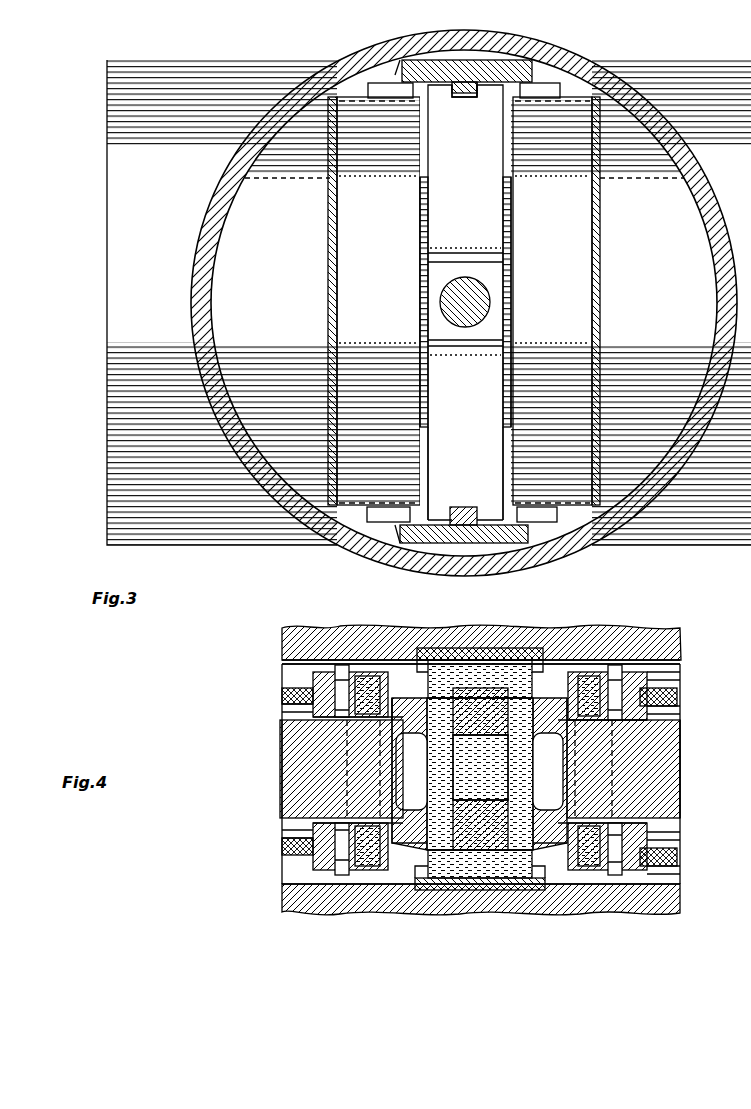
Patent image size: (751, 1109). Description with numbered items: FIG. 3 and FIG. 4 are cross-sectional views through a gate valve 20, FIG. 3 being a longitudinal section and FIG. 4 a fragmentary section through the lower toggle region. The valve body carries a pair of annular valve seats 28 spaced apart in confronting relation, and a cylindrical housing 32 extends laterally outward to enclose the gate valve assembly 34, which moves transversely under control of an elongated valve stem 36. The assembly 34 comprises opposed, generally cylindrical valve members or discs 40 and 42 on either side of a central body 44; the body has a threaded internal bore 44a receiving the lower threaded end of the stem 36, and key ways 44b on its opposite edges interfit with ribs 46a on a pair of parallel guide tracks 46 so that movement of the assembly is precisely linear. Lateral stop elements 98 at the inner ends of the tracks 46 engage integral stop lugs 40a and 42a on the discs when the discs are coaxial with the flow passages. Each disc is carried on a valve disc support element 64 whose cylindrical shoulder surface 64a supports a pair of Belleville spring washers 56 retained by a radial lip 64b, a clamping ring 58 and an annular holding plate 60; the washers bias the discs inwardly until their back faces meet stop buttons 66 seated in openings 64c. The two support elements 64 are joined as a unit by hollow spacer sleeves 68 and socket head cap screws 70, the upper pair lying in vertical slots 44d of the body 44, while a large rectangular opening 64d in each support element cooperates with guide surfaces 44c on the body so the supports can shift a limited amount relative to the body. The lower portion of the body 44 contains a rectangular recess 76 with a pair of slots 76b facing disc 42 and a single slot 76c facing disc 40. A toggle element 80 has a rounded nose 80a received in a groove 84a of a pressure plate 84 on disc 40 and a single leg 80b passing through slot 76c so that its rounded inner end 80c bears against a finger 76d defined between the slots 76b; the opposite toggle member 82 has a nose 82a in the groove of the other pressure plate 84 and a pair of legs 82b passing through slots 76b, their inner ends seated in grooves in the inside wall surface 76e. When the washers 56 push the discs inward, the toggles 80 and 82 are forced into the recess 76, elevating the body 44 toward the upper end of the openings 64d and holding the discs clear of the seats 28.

In FIG. 3, the gate valve 20 is at (146, 43).
In FIG. 3, the annular valve seat 28 is at (328, 296).
In FIG. 3, the cylindrical housing 32 is at (191, 290).
In FIG. 3, the gate valve assembly 34 is at (628, 266).
In FIG. 3, the valve stem 36 is at (443, 298).
In FIG. 3, the valve member 40 is at (378, 265).
In FIG. 4, the valve member 40 is at (682, 912).
In FIG. 3, the stop lug 40a is at (385, 90).
In FIG. 3, the valve member 42 is at (558, 265).
In FIG. 4, the valve member 42 is at (690, 634).
In FIG. 3, the stop lug 42a is at (548, 88).
In FIG. 3, the central portion 44 is at (471, 395).
In FIG. 4, the threaded internal bore 44a is at (690, 778).
In FIG. 3, the key way 44b is at (462, 97).
In FIG. 4, the guide surface 44c is at (612, 660).
In FIG. 4, the vertical slot 44d is at (282, 768).
In FIG. 3, the guide track 46 is at (510, 72).
In FIG. 3, the rib 46a is at (480, 82).
In FIG. 4, the Belleville spring washer 56 is at (675, 697).
In FIG. 4, the clamping ring 58 is at (285, 696).
In FIG. 3, the annular holding plate 60 is at (508, 442).
In FIG. 4, the annular holding plate 60 is at (292, 708).
In FIG. 3, the valve disc support element 64 is at (499, 196).
In FIG. 4, the valve disc support element 64 is at (300, 676).
In FIG. 4, the shoulder surface 64a is at (672, 710).
In FIG. 4, the radial lip 64b is at (672, 676).
In FIG. 4, the opening 64c is at (320, 720).
In FIG. 4, the rectangular opening 64d is at (362, 676).
In FIG. 4, the stop button 66 is at (305, 628).
In FIG. 3, the spacer sleeve 68 is at (421, 215).
In FIG. 4, the spacer sleeve 68 is at (282, 745).
In FIG. 4, the socket head cap screw 70 is at (320, 895).
In FIG. 4, the recess 76 is at (390, 790).
In FIG. 4, the slot 76b is at (420, 698).
In FIG. 4, the single opening slot 76c is at (478, 850).
In FIG. 4, the finger 76d is at (482, 698).
In FIG. 4, the inside wall surface 76e is at (522, 810).
In FIG. 4, the toggle element 80 is at (490, 900).
In FIG. 4, the nose portion 80a is at (528, 890).
In FIG. 4, the leg portion 80b is at (436, 865).
In FIG. 4, the rounded inner end portion 80c is at (470, 662).
In FIG. 4, the toggle member 82 is at (500, 665).
In FIG. 4, the nose portion 82a is at (450, 688).
In FIG. 4, the leg 82b is at (516, 757).
In FIG. 4, the pressure plate 84 is at (360, 672).
In FIG. 4, the groove 84a is at (615, 672).
In FIG. 3, the lateral stop element 98 is at (398, 75).